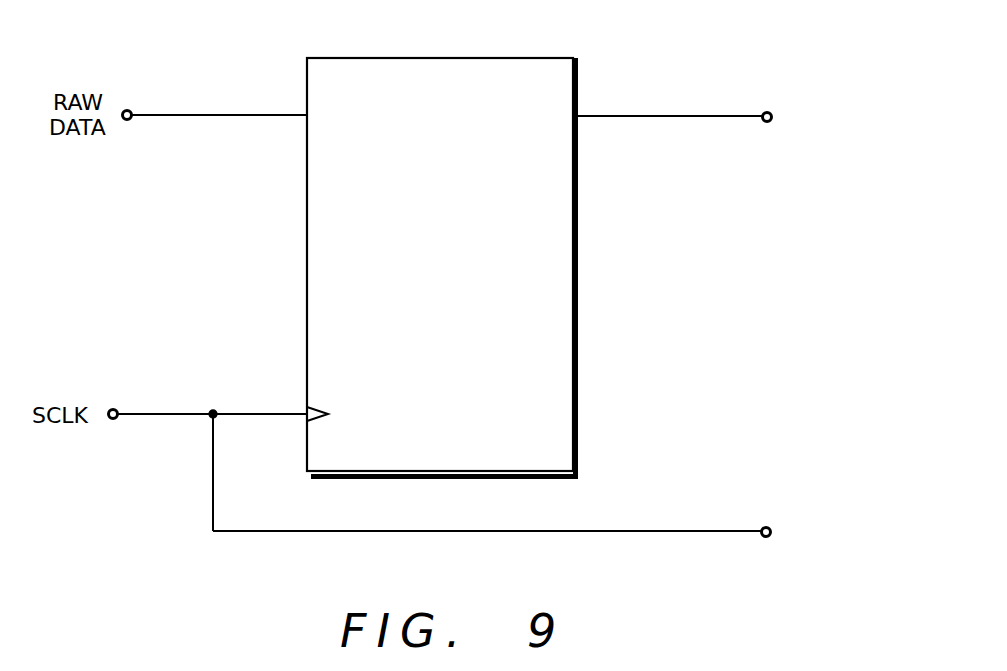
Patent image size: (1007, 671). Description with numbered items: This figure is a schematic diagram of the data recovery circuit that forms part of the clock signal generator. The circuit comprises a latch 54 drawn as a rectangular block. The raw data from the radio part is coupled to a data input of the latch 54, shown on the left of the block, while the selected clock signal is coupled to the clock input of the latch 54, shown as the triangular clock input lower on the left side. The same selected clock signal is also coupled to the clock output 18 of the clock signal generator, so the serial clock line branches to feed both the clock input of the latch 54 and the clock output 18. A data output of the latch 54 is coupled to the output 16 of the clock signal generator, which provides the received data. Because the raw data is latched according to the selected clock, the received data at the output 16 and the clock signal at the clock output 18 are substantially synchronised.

The latch 54 is at (369, 58).
The output 16 is at (770, 112).
The clock output 18 is at (770, 527).